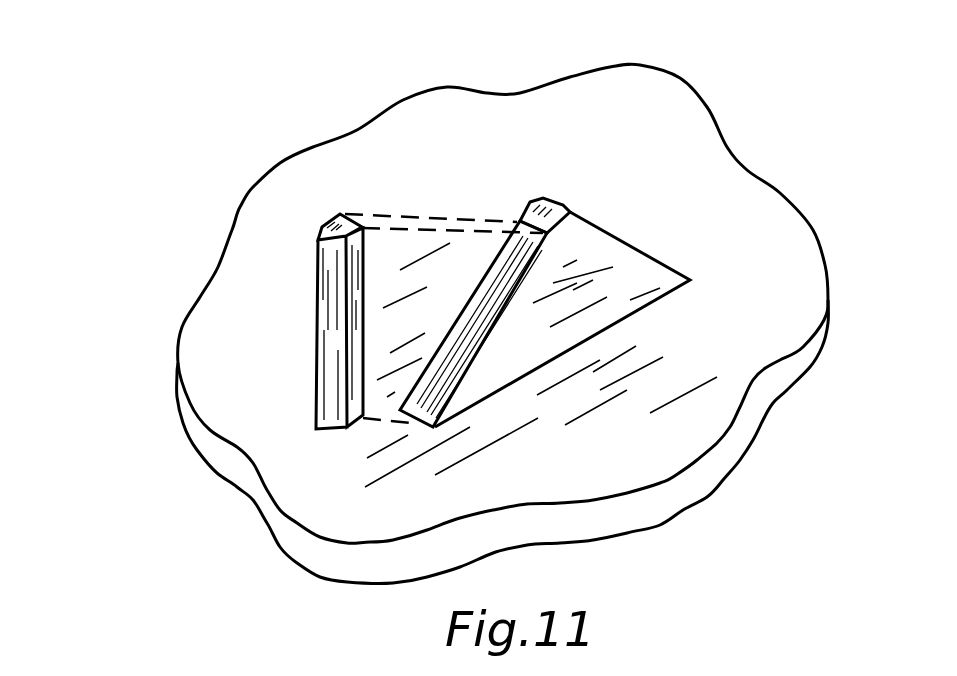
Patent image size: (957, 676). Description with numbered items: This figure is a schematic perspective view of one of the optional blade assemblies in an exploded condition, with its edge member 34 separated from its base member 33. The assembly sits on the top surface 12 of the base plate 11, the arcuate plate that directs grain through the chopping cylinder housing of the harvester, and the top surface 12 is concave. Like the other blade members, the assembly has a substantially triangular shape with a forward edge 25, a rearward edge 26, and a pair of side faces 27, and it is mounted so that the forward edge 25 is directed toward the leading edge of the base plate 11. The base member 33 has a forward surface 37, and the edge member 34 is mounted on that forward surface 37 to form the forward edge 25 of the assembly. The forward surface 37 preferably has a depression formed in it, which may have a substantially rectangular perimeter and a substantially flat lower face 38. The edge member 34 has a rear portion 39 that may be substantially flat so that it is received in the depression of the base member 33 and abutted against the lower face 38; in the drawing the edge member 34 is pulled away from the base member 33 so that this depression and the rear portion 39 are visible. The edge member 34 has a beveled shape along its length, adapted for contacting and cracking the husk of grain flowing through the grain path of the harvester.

The base plate 11 is at (740, 183).
The top surface 12 is at (646, 139).
The forward edge 25 is at (317, 357).
The rearward edge 26 is at (607, 292).
The side faces 27 is at (577, 300).
The base member 33 is at (643, 272).
The edge member 34 is at (327, 320).
The forward surface 37 is at (483, 222).
The lower face 38 is at (490, 313).
The rear portion 39 is at (362, 247).